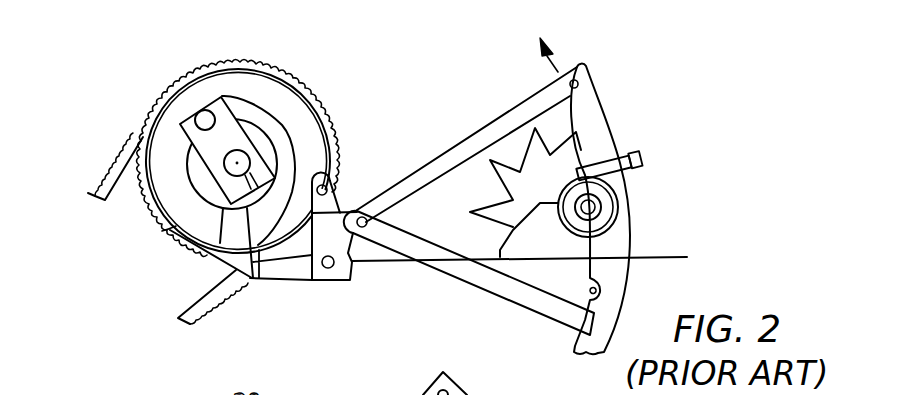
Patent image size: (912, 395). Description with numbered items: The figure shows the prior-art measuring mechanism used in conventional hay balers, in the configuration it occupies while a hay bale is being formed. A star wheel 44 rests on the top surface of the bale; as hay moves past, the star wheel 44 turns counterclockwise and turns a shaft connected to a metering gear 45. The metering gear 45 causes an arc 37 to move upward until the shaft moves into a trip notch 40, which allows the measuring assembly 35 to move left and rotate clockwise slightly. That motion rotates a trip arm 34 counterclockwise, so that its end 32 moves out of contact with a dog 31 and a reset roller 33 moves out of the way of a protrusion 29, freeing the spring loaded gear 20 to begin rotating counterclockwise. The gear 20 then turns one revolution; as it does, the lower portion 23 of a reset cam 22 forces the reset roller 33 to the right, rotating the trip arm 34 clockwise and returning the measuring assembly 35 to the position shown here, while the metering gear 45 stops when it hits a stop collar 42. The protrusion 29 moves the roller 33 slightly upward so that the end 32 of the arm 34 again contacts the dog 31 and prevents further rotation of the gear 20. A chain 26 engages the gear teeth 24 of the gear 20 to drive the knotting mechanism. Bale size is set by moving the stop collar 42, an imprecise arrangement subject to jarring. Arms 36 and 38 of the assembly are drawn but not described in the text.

The spring loaded gear 20 is at (280, 108).
The reset cam 22 is at (168, 147).
The lower portion of reset cam 23 is at (207, 232).
The gear teeth 24 is at (190, 246).
The chain 26 is at (103, 176).
The protrusion 29 is at (323, 147).
The dog 31 is at (225, 270).
The end of trip arm 32 is at (270, 270).
The reset roller 33 is at (333, 187).
The trip arm 34 is at (360, 277).
The measuring assembly 35 is at (458, 226).
The upper arm 36 is at (472, 136).
The arc 37 is at (585, 107).
The lower arm 38 is at (510, 290).
The trip notch 40 is at (603, 283).
The stop collar 42 is at (603, 163).
The star wheel 44 is at (518, 132).
The metering gear 45 is at (630, 237).